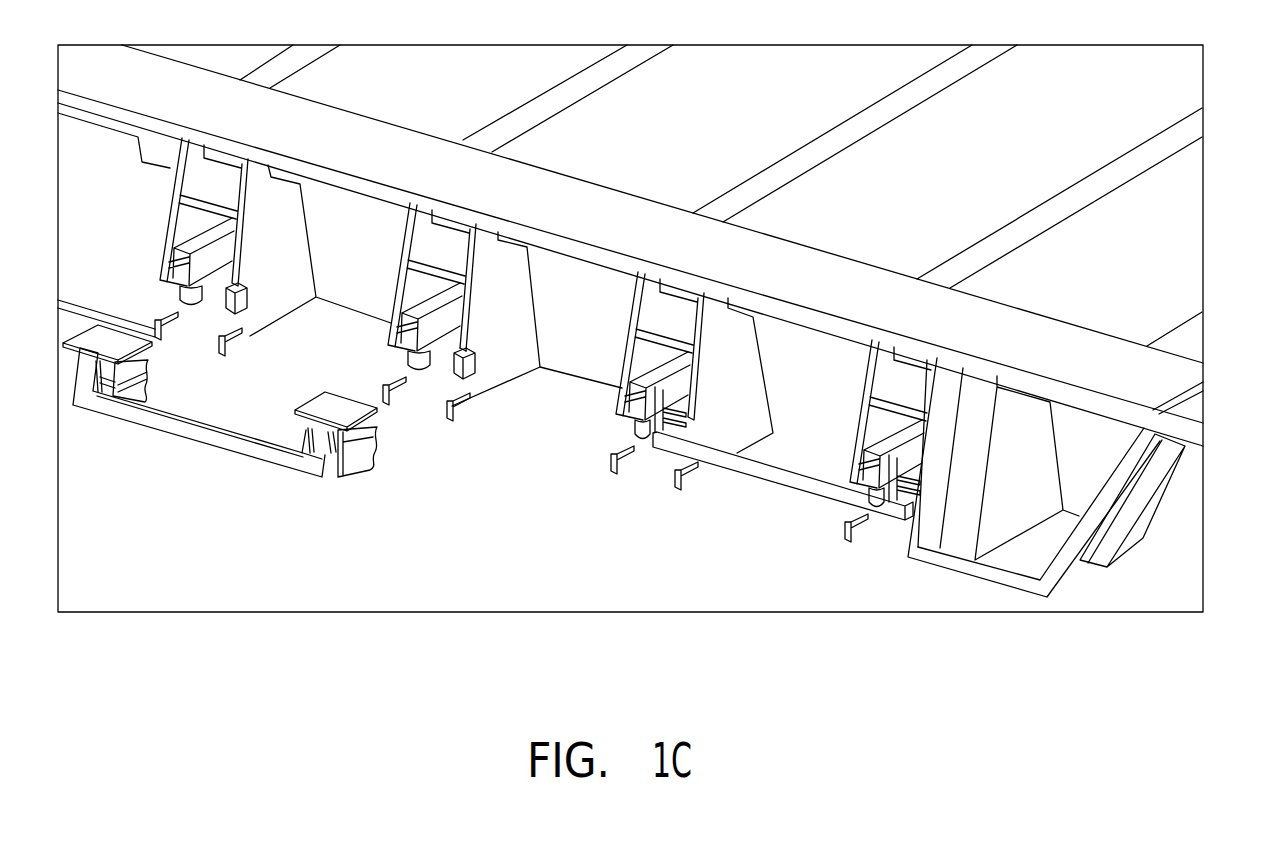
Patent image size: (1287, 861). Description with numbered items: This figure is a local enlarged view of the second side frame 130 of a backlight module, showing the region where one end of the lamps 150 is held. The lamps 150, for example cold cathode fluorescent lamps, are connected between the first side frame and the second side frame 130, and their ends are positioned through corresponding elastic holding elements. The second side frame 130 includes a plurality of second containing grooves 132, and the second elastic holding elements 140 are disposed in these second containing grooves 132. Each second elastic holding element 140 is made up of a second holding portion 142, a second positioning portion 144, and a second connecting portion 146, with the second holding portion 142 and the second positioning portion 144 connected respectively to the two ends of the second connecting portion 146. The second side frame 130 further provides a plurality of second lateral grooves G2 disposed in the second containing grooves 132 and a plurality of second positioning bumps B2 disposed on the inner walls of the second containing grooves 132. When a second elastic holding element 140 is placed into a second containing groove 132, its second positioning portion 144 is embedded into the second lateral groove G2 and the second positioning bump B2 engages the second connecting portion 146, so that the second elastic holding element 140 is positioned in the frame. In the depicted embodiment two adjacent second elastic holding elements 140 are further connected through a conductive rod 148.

The second side frame 130 is at (1122, 520).
The second containing grooves 132 is at (462, 376).
The second elastic holding elements 140 is at (225, 463).
The second holding portion 142 is at (350, 486).
The second positioning portion 144 is at (297, 412).
The second connecting portion 146 is at (370, 430).
The conductive rod 148 is at (157, 422).
The lamps 150 is at (1135, 168).
The second positioning bumps B2 is at (471, 390).
The second lateral grooves G2 is at (464, 347).